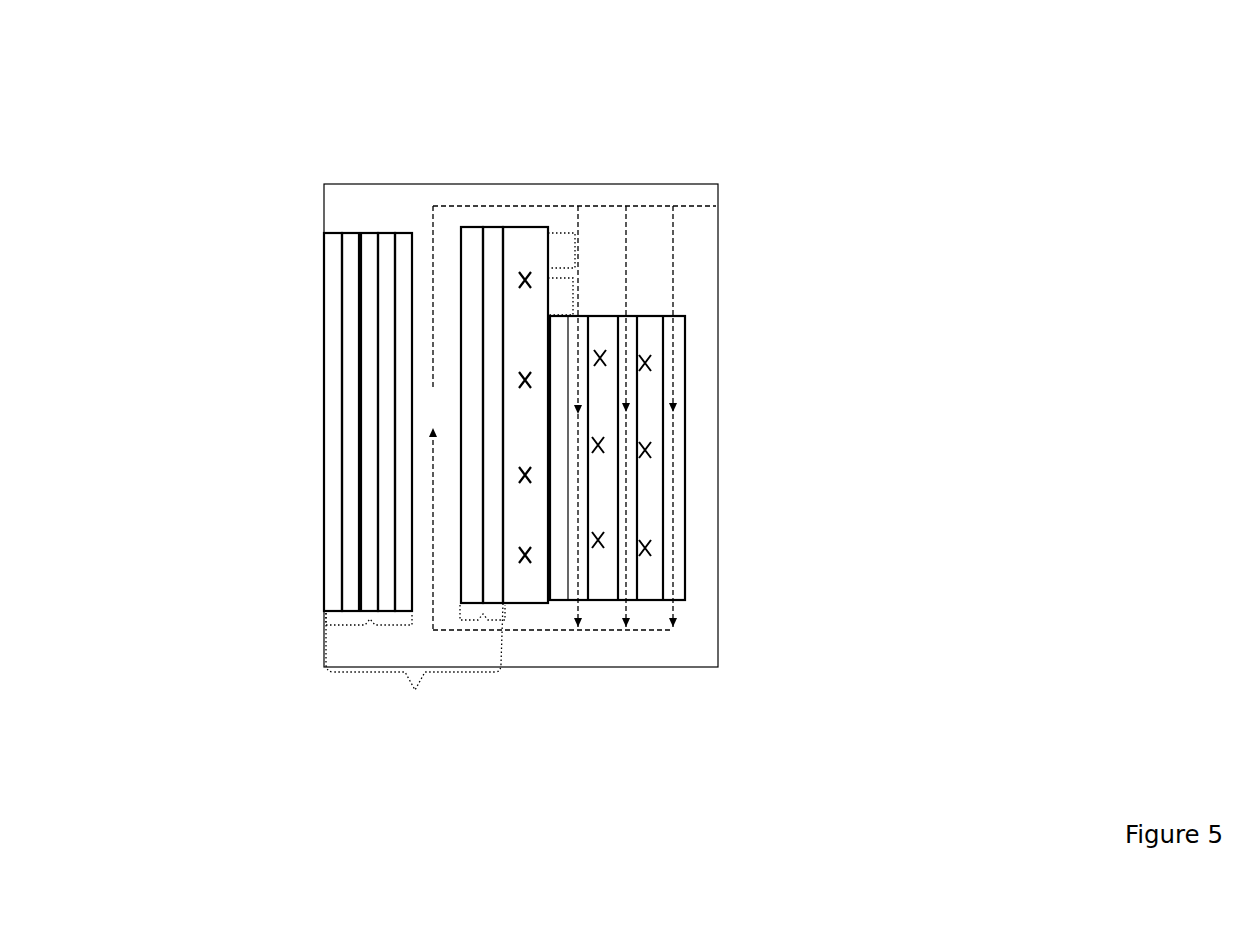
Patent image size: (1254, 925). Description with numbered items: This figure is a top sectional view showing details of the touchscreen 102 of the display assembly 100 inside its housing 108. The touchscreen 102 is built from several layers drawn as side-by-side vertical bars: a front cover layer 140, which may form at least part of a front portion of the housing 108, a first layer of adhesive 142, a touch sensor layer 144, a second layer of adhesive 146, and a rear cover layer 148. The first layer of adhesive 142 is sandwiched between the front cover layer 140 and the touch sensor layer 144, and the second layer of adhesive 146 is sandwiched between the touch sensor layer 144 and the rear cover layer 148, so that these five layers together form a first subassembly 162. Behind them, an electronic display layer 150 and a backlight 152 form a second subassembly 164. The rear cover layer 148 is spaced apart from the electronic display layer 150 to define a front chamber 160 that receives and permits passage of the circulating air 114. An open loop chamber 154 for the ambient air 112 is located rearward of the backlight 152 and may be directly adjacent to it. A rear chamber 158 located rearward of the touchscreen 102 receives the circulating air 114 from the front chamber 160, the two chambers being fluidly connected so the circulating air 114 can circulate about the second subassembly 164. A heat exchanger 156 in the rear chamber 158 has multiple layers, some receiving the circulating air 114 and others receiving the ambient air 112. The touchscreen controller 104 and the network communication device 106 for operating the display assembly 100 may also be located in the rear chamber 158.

The display assembly 100 is at (808, 110).
The touchscreen 102 is at (414, 685).
The touchscreen controller 104 is at (576, 250).
The network communication device 106 is at (574, 298).
The housing 108 is at (545, 184).
The ambient air 112 is at (533, 558).
The circulating air 114 is at (483, 228).
The front cover layer 140 is at (324, 232).
The first layer of adhesive 142 is at (350, 232).
The touch sensor layer 144 is at (368, 232).
The second layer of adhesive 146 is at (388, 232).
The rear cover layer 148 is at (405, 232).
The electronic display layer 150 is at (471, 228).
The backlight 152 is at (496, 228).
The open loop chamber 154 is at (525, 597).
The heat exchanger 156 is at (687, 433).
The rear chamber 158 is at (648, 225).
The front chamber 160 is at (416, 569).
The first subassembly 162 is at (369, 640).
The second subassembly 164 is at (479, 635).